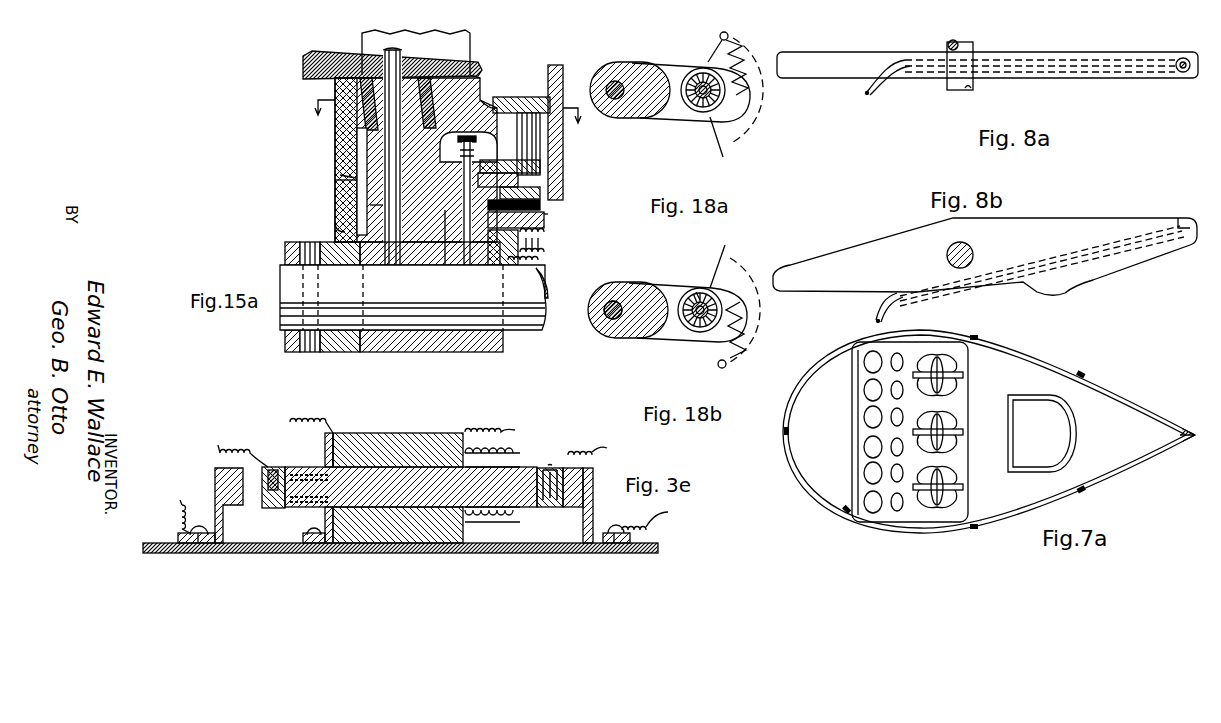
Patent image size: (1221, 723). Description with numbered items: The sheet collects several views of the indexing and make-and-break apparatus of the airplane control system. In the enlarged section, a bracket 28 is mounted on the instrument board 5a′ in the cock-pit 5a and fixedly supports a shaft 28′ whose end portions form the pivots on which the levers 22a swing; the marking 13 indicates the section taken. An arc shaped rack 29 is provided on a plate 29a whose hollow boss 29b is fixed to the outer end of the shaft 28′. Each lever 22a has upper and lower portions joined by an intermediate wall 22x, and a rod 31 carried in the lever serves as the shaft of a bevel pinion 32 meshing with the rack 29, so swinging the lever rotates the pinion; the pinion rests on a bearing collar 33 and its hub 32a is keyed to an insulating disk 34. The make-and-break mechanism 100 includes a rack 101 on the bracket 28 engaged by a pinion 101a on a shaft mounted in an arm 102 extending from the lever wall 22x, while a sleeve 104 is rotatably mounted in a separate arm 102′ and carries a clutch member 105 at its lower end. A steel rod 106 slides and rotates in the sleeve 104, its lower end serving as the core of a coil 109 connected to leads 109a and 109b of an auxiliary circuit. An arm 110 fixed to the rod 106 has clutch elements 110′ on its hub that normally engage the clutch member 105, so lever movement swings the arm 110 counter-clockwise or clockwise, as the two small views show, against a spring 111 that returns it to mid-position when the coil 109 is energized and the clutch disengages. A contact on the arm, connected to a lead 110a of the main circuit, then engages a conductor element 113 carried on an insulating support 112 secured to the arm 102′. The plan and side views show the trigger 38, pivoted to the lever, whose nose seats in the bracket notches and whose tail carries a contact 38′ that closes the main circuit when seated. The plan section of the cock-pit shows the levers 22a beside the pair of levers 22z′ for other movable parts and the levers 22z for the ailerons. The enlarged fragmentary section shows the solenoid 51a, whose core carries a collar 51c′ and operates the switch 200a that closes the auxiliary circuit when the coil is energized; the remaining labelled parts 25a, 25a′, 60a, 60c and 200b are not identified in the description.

In FIG. 15a, the arc shaped rack 29 is at (335, 86).
In FIG. 15a, the disk 34 is at (305, 66).
In FIG. 15a, the bevel pinion 32 is at (368, 100).
In FIG. 15a, the hub 32a is at (382, 58).
In FIG. 15a, the bearing disk or collar 33 is at (357, 146).
In FIG. 15a, the sleeve 104 is at (340, 175).
In FIG. 15a, the plate 29a is at (338, 182).
In FIG. 15a, the rod 31 is at (370, 204).
In FIG. 18b, the rod 31 is at (612, 320).
In FIG. 15a, the clutch member 105 is at (340, 226).
In FIG. 15a, the section line 13 is at (447, 118).
In FIG. 15a, the steel rod 106 is at (467, 268).
In FIG. 15a, the coil 109 is at (447, 265).
In FIG. 15a, the make-and-break mechanism 100 is at (503, 96).
In FIG. 15a, the rack 101 is at (565, 146).
In FIG. 15a, the pinion 101a is at (528, 97).
In FIG. 15a, the bracket 28 is at (563, 78).
In FIG. 15a, the arm 102 is at (540, 165).
In FIG. 15a, the separate arm 102′ is at (520, 180).
In FIG. 15a, the support 112 is at (540, 192).
In FIG. 15a, the conductor element 113 is at (540, 206).
In FIG. 15a, the arm 110 is at (544, 218).
In FIG. 18a, the arm 110 is at (714, 70).
In FIG. 18b, the arm 110 is at (697, 350).
In FIG. 15a, the lead 110a is at (590, 222).
In FIG. 8a, the lead 110a is at (873, 97).
In FIG. 8b, the lead 110a is at (872, 308).
In FIG. 15a, the lead 109a is at (545, 238).
In FIG. 15a, the lead 109b is at (545, 262).
In FIG. 3e, the lead 109b is at (180, 500).
In FIG. 15a, the hollow boss 29b is at (290, 250).
In FIG. 15a, the lever 22a is at (370, 352).
In FIG. 7a, the lever 22a is at (948, 425).
In FIG. 15a, the shaft 28′ is at (525, 332).
In FIG. 15a, the intermediate wall 22x is at (478, 73).
In FIG. 18a, the spring 111 is at (742, 56).
In FIG. 18b, the spring 111 is at (748, 334).
In FIG. 18b, the clutch elements 110′ is at (698, 290).
In FIG. 8a, the trigger 38 is at (1085, 52).
In FIG. 8b, the trigger 38 is at (905, 236).
In FIG. 8a, the contact 38′ is at (1182, 74).
In FIG. 8b, the contact 38′ is at (1178, 218).
In FIG. 7a, the cock-pit 5a is at (1036, 352).
In FIG. 7a, the instrument board 5a′ is at (858, 430).
In FIG. 7a, the levers 22z′ is at (948, 370).
In FIG. 7a, the levers 22z is at (948, 478).
In FIG. 3e, the solenoid 51a is at (394, 441).
In FIG. 3e, the switch 200a is at (283, 511).
In FIG. 3e, the collar 51c′ is at (520, 520).
In FIG. 3e, the spring 25a′ is at (607, 448).
In FIG. 3e, the spring 25a is at (668, 512).
In FIG. 3e, the spring 60c is at (290, 422).
In FIG. 3e, the spring 60a is at (515, 430).
In FIG. 3e, the spring 200b is at (216, 460).